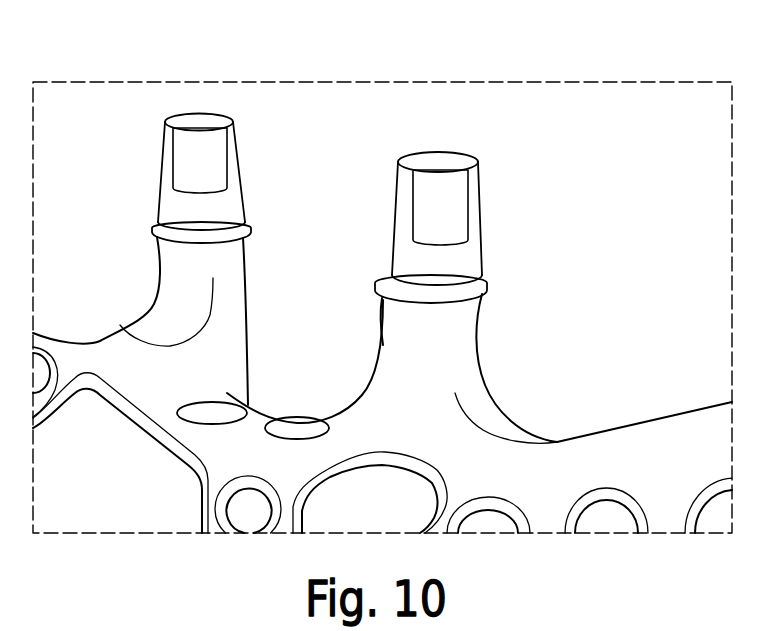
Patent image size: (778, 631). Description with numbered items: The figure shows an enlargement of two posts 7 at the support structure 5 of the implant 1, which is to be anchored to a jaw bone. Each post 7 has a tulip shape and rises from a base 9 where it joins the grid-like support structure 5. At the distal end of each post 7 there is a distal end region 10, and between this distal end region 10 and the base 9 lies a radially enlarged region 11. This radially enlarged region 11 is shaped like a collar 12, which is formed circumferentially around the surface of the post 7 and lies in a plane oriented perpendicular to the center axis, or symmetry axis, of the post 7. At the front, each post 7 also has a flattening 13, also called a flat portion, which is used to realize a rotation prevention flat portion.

The implant 1 is at (537, 408).
The support structure 5 is at (610, 447).
The post 7 is at (331, 210).
The base 9 is at (178, 301).
The distal end region 10 is at (148, 120).
The radially enlarged region 11 is at (247, 223).
The collar 12 is at (480, 281).
The flattening 13 is at (195, 148).